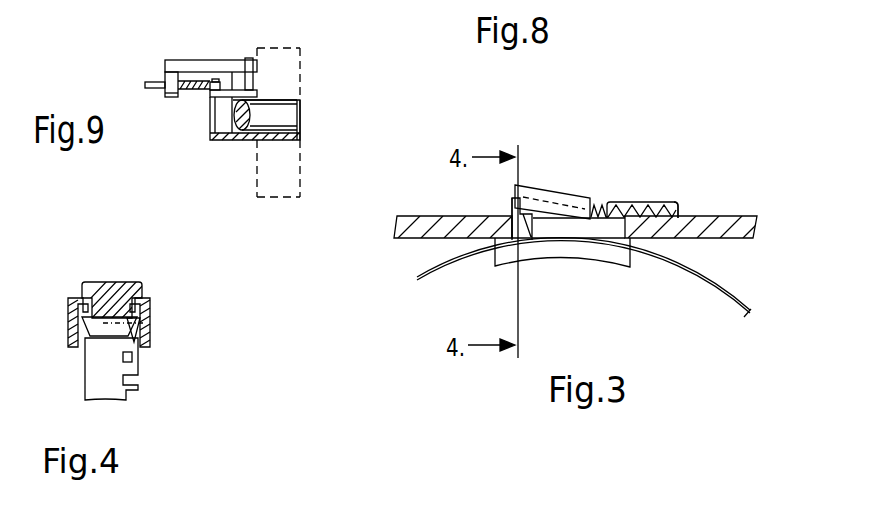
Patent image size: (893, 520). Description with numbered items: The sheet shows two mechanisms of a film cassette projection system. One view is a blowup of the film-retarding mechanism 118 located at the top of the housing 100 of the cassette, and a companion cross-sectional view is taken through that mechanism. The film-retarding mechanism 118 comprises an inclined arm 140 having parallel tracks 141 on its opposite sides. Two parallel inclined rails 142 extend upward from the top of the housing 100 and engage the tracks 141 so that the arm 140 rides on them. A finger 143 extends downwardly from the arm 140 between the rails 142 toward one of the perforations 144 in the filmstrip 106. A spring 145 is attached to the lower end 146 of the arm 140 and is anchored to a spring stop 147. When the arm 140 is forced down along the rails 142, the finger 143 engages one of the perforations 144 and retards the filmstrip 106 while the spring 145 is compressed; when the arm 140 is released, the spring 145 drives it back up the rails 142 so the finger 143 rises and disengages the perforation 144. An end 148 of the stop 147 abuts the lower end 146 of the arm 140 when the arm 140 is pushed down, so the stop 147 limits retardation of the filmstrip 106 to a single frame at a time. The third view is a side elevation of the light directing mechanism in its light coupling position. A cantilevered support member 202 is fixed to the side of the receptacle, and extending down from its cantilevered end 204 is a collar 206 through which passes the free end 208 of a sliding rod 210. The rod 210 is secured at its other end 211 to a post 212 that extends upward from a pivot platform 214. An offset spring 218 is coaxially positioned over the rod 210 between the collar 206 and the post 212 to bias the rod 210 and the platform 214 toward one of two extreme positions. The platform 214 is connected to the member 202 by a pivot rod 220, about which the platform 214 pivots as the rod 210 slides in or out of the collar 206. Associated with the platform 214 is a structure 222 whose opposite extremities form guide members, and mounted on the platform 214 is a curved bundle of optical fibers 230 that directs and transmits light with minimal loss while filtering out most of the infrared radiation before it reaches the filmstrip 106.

In FIG. 3, the housing 100 is at (413, 227).
In FIG. 3, the filmstrip 106 is at (704, 284).
In FIG. 4, the film-retarding mechanism 118 is at (82, 372).
In FIG. 3, the film-retarding mechanism 118 is at (638, 185).
In FIG. 4, the inclined arm 140 is at (117, 302).
In FIG. 3, the inclined arm 140 is at (554, 192).
In FIG. 4, the parallel tracks 141 is at (109, 296).
In FIG. 4, the inclined rails 142 is at (70, 308).
In FIG. 4, the finger 143 is at (136, 330).
In FIG. 3, the finger 143 is at (516, 214).
In FIG. 4, the perforations 144 is at (131, 357).
In FIG. 3, the spring 145 is at (658, 202).
In FIG. 3, the lower end of the arm 146 is at (598, 208).
In FIG. 3, the spring stop 147 is at (679, 204).
In FIG. 3, the end of the stop 148 is at (601, 206).
In FIG. 9, the cantilevered support member 202 is at (208, 60).
In FIG. 9, the cantilevered end 204 is at (165, 64).
In FIG. 9, the collar 206 is at (166, 96).
In FIG. 9, the free end of the sliding rod 208 is at (145, 84).
In FIG. 9, the sliding rod 210 is at (197, 92).
In FIG. 9, the other end of the rod 211 is at (211, 95).
In FIG. 9, the post 212 is at (217, 128).
In FIG. 9, the pivot platform 214 is at (243, 137).
In FIG. 9, the offset spring 218 is at (193, 73).
In FIG. 9, the pivot rod 220 is at (254, 72).
In FIG. 9, the structure 222 is at (233, 80).
In FIG. 9, the curved bundle of optical fibers 230 is at (301, 101).